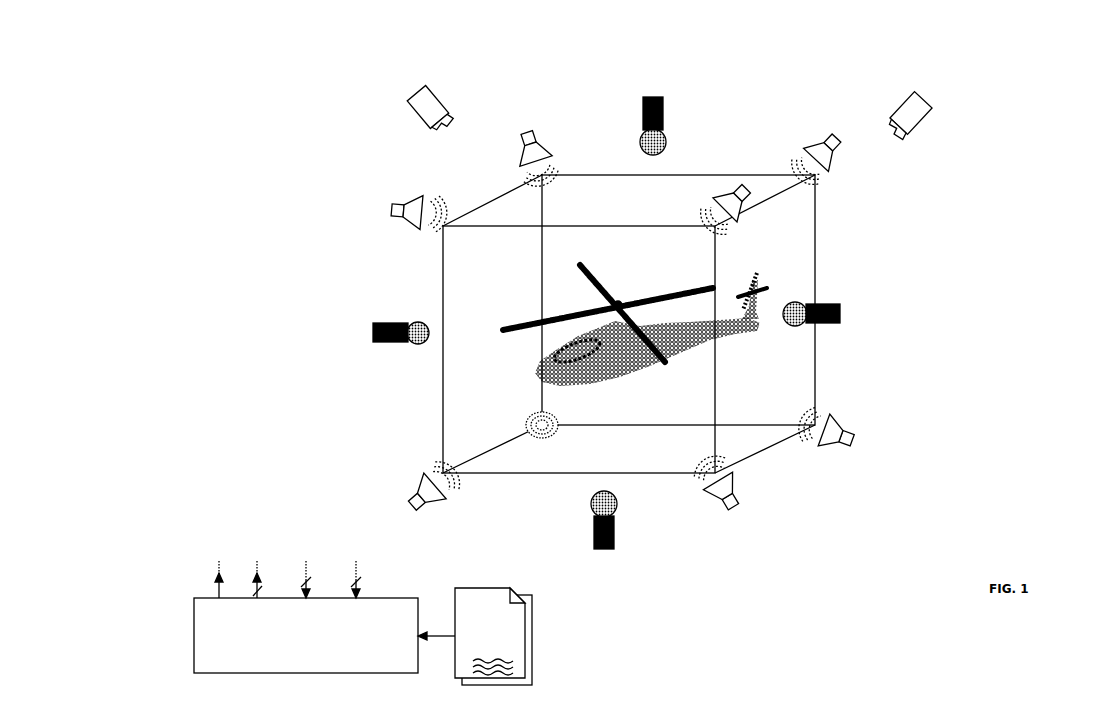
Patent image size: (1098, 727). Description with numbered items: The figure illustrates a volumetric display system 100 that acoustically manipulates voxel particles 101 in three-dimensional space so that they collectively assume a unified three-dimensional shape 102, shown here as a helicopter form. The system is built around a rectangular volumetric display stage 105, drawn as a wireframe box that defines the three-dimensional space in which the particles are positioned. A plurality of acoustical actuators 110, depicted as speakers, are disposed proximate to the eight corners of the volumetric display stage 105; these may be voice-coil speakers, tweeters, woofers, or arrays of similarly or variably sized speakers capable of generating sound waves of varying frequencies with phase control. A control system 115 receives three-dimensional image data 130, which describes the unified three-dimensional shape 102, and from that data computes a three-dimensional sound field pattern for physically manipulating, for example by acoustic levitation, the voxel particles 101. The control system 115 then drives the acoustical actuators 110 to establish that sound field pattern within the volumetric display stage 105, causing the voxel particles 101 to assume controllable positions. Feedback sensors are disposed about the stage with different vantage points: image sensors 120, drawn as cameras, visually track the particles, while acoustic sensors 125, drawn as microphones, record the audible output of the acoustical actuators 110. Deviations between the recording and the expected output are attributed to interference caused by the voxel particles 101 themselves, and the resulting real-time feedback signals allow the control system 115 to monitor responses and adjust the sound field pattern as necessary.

The volumetric display system 100 is at (334, 90).
The voxel particles 101 is at (522, 323).
The unified 3D shape 102 is at (647, 276).
The volumetric display stage 105 is at (443, 378).
The acoustical actuators 110 is at (393, 206).
The control system 115 is at (296, 652).
The image sensors 120 is at (420, 92).
The acoustic sensors 125 is at (652, 96).
The 3D image data 130 is at (532, 667).